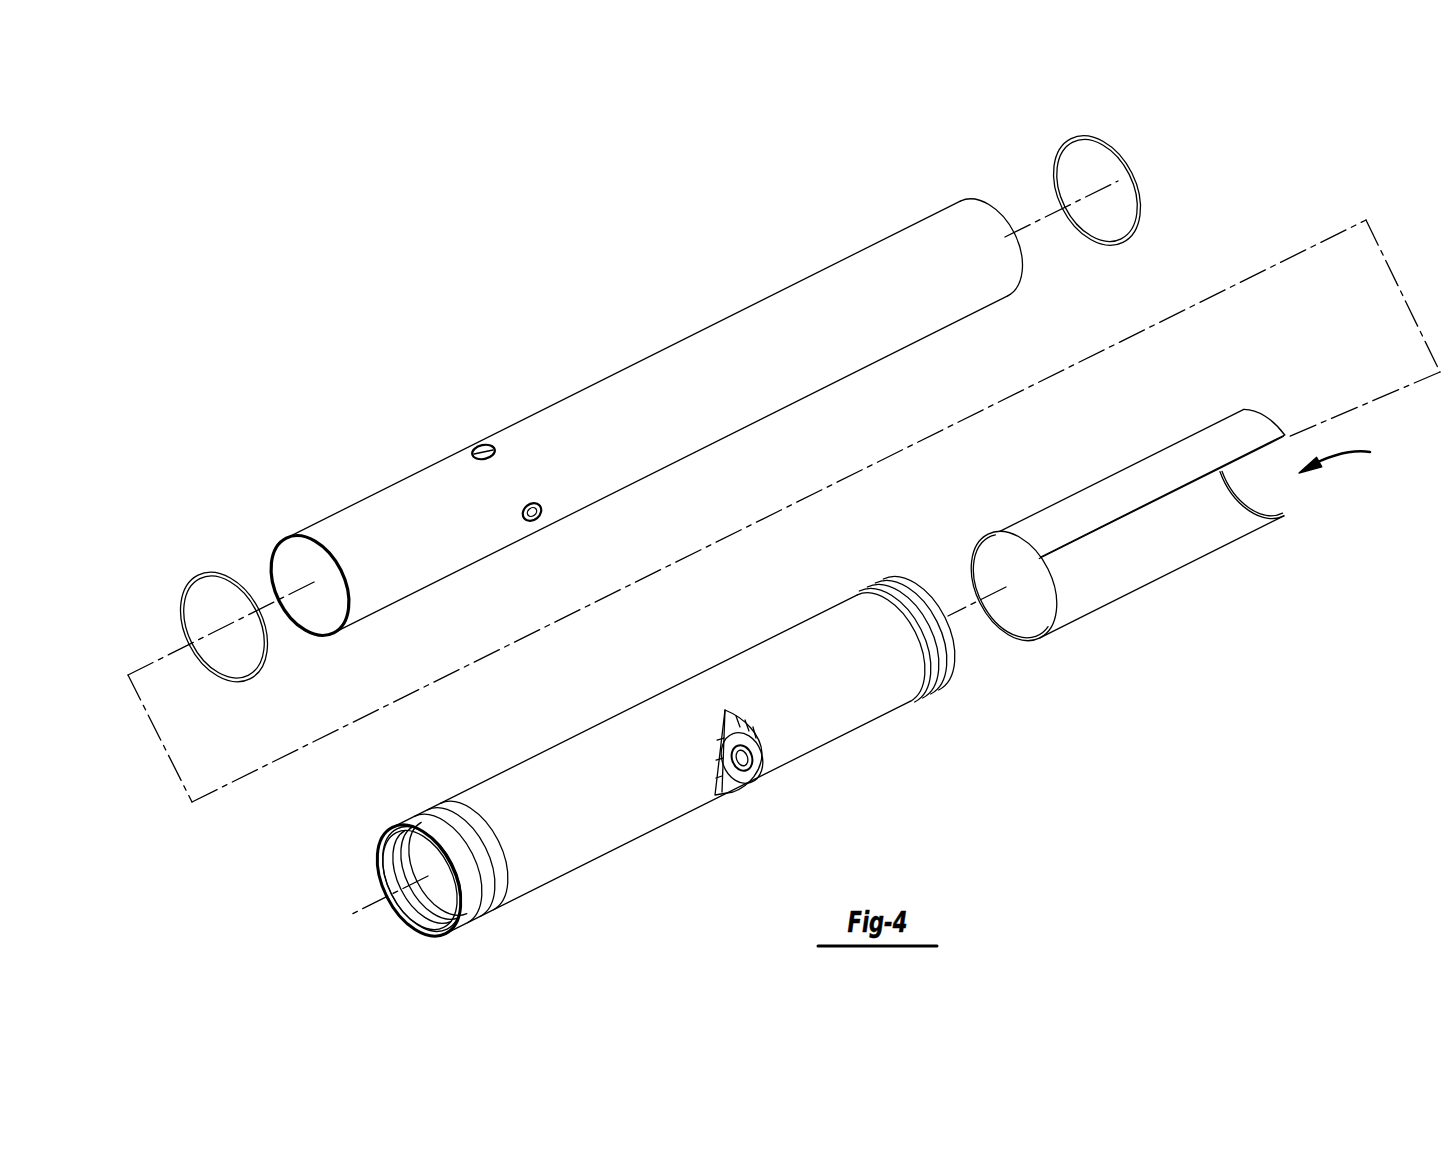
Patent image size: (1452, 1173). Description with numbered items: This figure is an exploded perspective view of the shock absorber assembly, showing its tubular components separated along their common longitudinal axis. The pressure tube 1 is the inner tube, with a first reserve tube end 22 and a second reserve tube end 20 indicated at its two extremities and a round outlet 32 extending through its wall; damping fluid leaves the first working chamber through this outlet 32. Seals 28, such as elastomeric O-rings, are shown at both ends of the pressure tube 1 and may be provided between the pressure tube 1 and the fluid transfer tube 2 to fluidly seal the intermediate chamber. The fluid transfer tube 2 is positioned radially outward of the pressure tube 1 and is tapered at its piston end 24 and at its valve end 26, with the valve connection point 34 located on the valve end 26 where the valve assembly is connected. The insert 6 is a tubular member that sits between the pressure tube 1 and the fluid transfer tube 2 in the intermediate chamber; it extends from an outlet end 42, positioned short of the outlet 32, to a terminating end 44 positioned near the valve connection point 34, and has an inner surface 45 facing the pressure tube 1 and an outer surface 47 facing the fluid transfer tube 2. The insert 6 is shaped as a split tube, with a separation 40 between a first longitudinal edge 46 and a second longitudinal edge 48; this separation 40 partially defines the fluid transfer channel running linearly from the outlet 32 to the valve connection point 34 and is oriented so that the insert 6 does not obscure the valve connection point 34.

The pressure tube 1 is at (427, 487).
The fluid transfer tube 2 is at (600, 835).
The insert 6 is at (1027, 512).
The second reserve tube end 20 is at (910, 250).
The first reserve tube end 22 is at (344, 520).
The piston end 24 is at (490, 897).
The valve end 26 is at (937, 665).
The seals 28 is at (222, 578).
The outlet 32 is at (542, 503).
The valve connection point 34 is at (748, 772).
The separation 40 is at (1351, 452).
The outlet end 42 is at (975, 568).
The terminating end 44 is at (1270, 418).
The inner surface 45 is at (1193, 532).
The first longitudinal edge 46 is at (1072, 543).
The outer surface 47 is at (1205, 452).
The second longitudinal edge 48 is at (1137, 583).